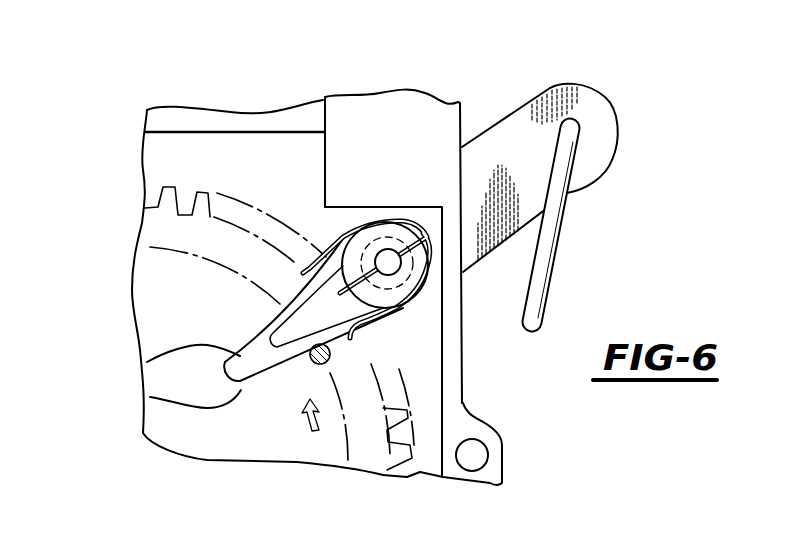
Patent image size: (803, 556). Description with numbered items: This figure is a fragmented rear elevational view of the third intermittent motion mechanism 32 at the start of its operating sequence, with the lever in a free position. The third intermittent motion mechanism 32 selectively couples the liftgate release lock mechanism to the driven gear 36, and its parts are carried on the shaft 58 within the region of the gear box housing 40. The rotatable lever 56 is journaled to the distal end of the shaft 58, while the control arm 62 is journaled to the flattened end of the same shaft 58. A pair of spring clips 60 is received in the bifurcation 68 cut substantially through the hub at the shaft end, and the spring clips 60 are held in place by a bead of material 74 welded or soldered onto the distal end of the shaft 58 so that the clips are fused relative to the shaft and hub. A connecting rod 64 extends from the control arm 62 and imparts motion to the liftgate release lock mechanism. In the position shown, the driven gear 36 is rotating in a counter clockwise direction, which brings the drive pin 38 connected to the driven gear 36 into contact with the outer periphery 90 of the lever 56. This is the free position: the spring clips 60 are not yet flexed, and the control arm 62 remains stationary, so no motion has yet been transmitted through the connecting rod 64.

The third intermittent motion mechanism 32 is at (479, 100).
The driven gear 36 is at (160, 225).
The drive pin 38 is at (440, 403).
The gear box housing 40 is at (493, 457).
The rotatable lever 56 is at (147, 362).
The shaft 58 is at (340, 225).
The spring clips 60 is at (413, 292).
The control arm 62 is at (590, 107).
The connecting rod 64 is at (552, 220).
The bifurcation 68 is at (397, 292).
The bead of material 74 is at (387, 258).
The outer periphery 90 is at (150, 397).